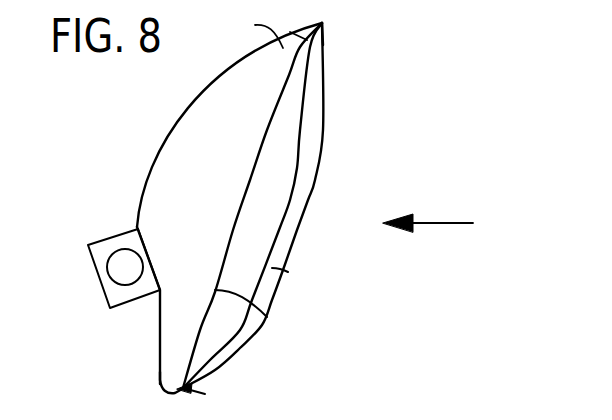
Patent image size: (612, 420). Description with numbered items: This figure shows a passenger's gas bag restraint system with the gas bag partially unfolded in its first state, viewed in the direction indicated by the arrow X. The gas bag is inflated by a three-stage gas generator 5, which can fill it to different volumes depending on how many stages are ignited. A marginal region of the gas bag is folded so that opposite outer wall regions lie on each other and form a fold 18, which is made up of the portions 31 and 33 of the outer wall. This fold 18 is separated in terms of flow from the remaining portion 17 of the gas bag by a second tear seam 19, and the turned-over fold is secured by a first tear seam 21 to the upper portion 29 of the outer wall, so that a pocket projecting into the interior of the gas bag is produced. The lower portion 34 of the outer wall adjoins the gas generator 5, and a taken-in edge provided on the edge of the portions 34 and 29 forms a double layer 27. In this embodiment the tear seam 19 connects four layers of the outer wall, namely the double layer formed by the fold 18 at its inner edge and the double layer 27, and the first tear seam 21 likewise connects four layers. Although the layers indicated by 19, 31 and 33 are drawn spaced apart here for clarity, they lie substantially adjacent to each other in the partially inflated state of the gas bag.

The three-stage gas generator 5 is at (114, 271).
The remaining portion of the gas bag 17 is at (186, 104).
The fold 18 is at (297, 168).
The second tear seam 19 is at (322, 47).
The first tear seam 21 is at (160, 376).
The double layer 27 is at (266, 30).
The upper portion of the outer wall 29 is at (267, 317).
The portion of the outer wall 31 is at (288, 272).
The portion of the outer wall 33 is at (301, 237).
The lower portion of the outer wall 34 is at (146, 191).
The viewing direction X is at (428, 212).